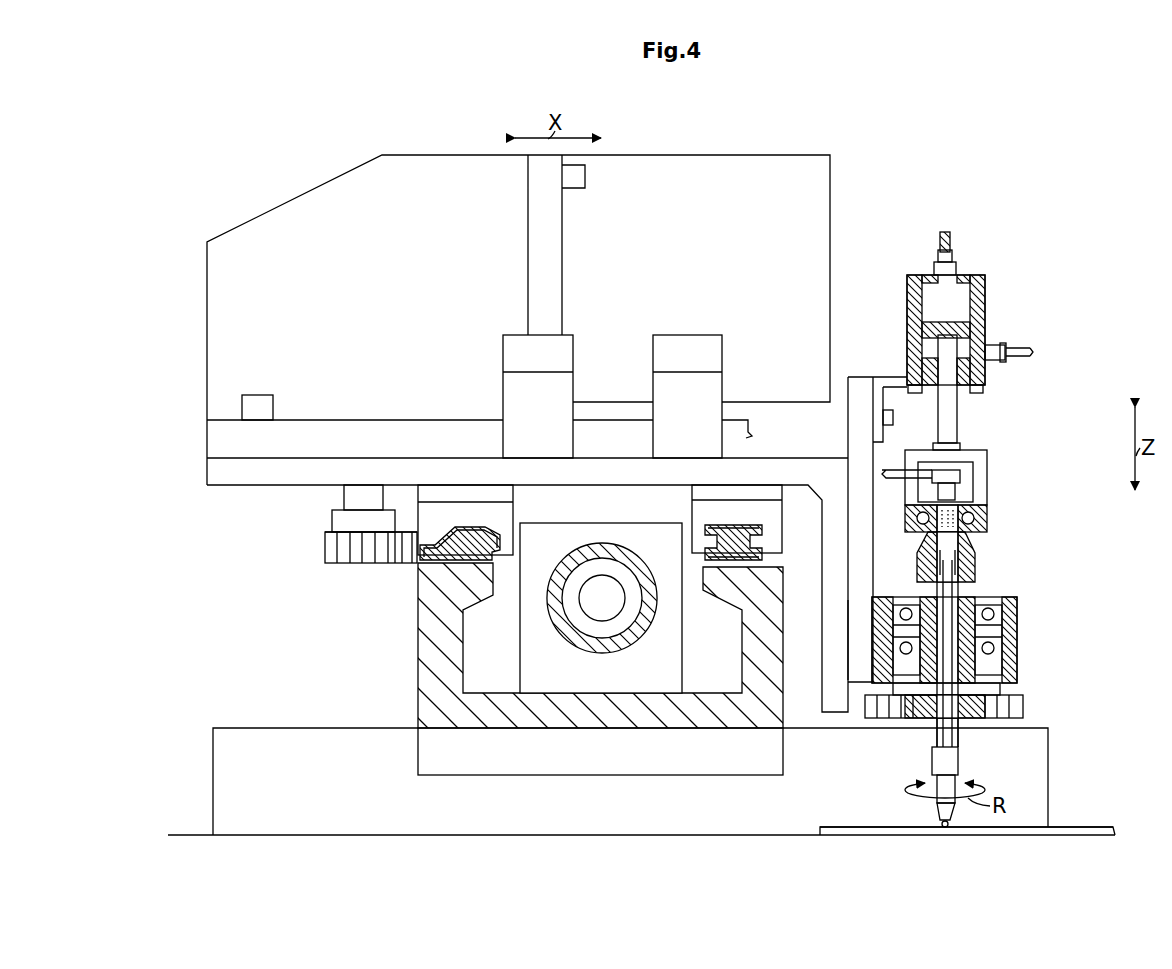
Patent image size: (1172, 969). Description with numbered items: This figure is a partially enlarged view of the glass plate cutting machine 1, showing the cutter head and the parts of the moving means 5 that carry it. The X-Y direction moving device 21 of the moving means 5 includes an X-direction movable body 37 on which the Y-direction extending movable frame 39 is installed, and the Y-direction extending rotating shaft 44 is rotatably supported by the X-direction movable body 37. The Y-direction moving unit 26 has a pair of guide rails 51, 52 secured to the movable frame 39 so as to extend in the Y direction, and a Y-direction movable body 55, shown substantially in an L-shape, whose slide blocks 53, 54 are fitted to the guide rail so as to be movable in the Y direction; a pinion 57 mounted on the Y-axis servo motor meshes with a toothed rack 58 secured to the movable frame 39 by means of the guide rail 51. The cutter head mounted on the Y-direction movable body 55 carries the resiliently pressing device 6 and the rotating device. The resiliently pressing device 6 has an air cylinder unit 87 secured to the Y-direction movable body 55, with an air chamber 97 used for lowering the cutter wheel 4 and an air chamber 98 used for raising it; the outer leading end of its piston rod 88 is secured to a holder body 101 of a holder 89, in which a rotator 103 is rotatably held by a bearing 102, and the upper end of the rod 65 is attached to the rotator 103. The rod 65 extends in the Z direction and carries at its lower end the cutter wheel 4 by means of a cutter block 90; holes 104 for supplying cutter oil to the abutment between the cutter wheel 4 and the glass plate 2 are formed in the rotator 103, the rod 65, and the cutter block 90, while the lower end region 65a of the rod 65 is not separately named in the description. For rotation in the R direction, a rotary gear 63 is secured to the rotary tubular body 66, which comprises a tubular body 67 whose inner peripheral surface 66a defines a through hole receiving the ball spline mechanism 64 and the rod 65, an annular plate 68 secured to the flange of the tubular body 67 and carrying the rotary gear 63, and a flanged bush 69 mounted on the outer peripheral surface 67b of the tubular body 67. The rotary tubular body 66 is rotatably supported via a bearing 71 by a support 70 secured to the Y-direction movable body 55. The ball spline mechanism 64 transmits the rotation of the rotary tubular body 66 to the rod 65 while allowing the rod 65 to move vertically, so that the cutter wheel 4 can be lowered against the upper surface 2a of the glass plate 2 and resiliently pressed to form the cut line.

The glass plate cutting machine 1 is at (216, 196).
The moving means 5 is at (204, 396).
The X-Y direction moving device 21 is at (204, 448).
The Y-direction movable body 55 is at (206, 475).
The Y-direction moving unit 26 is at (322, 566).
The pinion 57 is at (392, 563).
The toothed rack 58 is at (408, 565).
The slide block 53 is at (472, 510).
The guide rail 51 is at (488, 535).
The slide block 54 is at (733, 510).
The guide rail 52 is at (743, 525).
The Y-direction extending movable frame 39 is at (416, 684).
The Y-direction extending rotating shaft 44 is at (580, 645).
The X-direction movable body 37 is at (384, 730).
The bearing 71 is at (893, 617).
The support 70 is at (880, 597).
The resiliently pressing device 6 is at (915, 266).
The air cylinder unit 87 is at (904, 287).
The air chamber 97 is at (965, 298).
The air chamber 98 is at (987, 360).
The piston rod 88 is at (952, 413).
The holder body 101 is at (985, 460).
The holder 89 is at (983, 485).
The bearing 102 is at (980, 512).
The holes 104 is at (962, 555).
The rotator 103 is at (962, 573).
The ball spline mechanism 64 is at (962, 593).
The outer peripheral surface 67b is at (1002, 604).
The rotary tubular body 66 is at (997, 615).
The inner peripheral surface 66a is at (985, 640).
The tubular body 67 is at (1000, 660).
The flanged bush 69 is at (990, 682).
The annular plate 68 is at (1000, 698).
The rotary gear 63 is at (923, 738).
The rod 65 is at (958, 738).
The chuck 65a is at (958, 760).
The cutter block 90 is at (933, 770).
The cutter wheel 4 is at (945, 830).
The upper surface 2a is at (915, 826).
The glass plate 2 is at (985, 836).